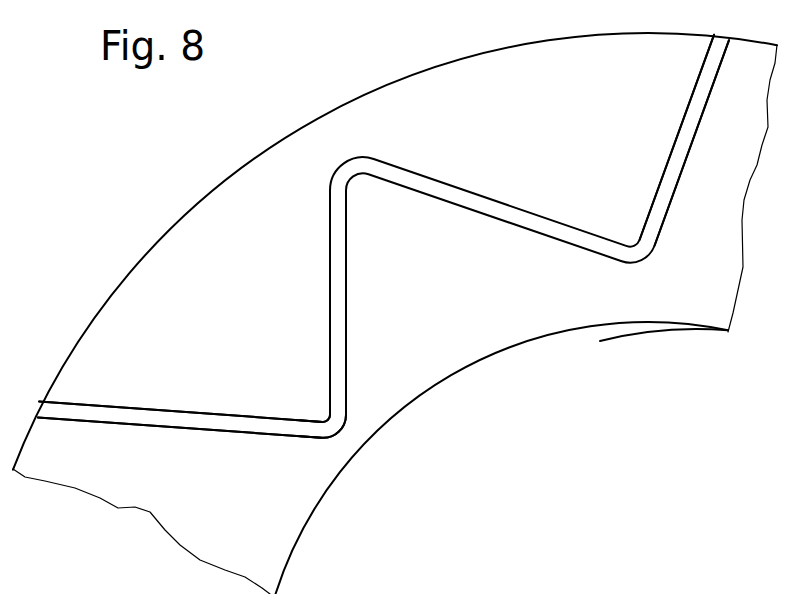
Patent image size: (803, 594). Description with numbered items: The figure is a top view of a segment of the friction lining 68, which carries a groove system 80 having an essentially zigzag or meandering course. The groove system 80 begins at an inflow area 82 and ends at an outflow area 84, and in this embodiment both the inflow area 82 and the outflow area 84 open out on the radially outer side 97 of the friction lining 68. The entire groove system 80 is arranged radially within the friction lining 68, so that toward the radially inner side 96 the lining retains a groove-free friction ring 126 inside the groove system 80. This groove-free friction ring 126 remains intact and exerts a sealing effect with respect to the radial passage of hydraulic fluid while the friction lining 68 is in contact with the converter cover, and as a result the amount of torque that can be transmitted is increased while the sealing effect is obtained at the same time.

The radially outer side 97 is at (563, 37).
The radially inner side 96 is at (500, 355).
The friction lining 68 is at (602, 303).
The groove system 80 is at (337, 254).
The outflow area 84 is at (62, 412).
The inflow area 82 is at (715, 58).
The groove-free friction ring 126 is at (348, 426).